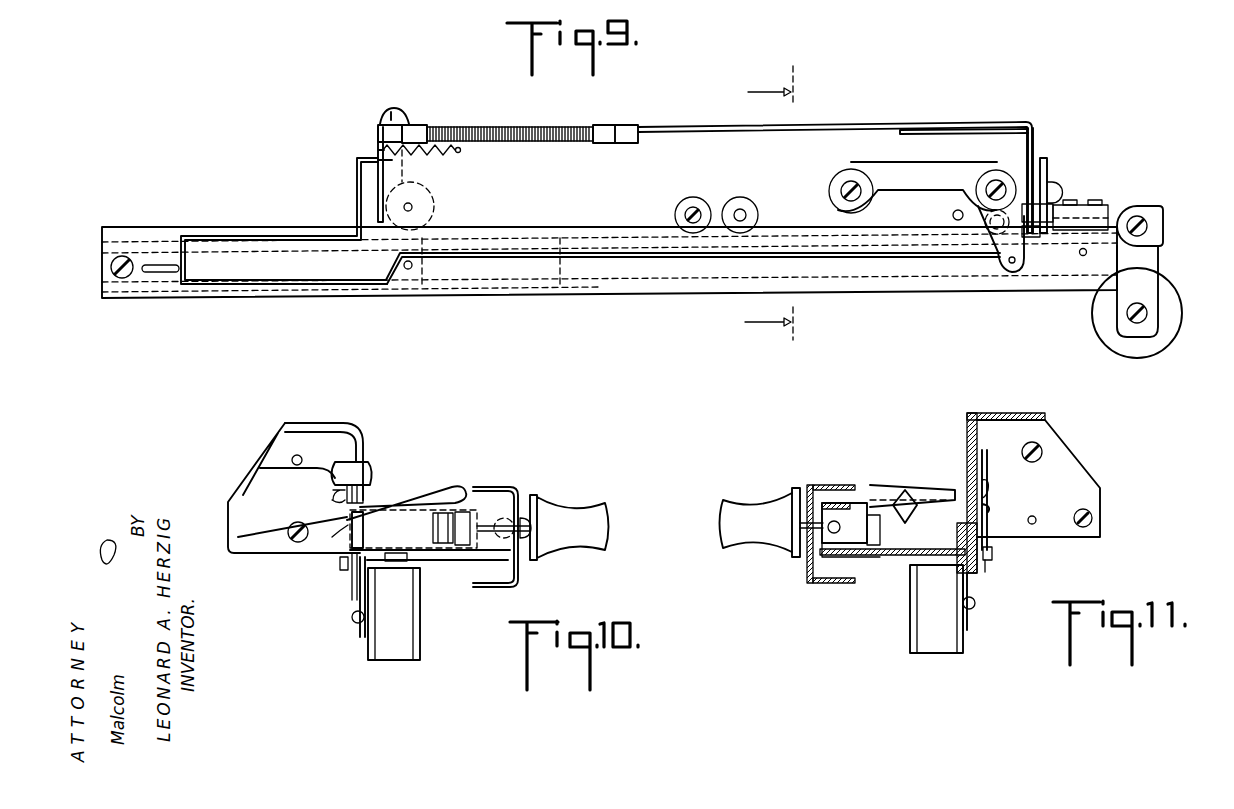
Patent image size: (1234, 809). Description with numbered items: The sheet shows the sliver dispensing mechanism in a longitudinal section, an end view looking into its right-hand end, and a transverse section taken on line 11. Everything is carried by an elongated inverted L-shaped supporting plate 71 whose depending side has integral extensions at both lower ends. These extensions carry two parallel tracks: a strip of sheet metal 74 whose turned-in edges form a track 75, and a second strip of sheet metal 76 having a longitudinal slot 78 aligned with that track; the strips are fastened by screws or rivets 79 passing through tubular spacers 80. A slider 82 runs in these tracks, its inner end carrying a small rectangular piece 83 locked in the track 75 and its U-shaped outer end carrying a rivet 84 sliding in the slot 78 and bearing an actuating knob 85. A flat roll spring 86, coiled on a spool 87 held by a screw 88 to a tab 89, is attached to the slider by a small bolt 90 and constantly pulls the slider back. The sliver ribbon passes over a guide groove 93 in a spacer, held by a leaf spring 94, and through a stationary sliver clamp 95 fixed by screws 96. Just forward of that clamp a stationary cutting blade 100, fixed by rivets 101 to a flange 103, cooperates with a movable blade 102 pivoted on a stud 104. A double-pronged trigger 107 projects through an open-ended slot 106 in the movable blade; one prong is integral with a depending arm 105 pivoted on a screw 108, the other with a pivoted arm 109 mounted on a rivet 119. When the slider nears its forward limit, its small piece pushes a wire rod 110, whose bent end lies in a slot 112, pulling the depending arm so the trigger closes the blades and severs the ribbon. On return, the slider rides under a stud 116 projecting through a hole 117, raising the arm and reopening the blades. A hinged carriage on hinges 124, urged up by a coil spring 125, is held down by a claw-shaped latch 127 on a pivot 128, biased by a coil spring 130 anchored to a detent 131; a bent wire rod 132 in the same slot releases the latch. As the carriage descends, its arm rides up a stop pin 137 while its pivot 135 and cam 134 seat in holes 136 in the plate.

In FIG. 9, the section line 11 is at (769, 209).
In FIG. 9, the supporting plate 71 is at (722, 138).
In FIG. 10, the supporting plate 71 is at (360, 428).
In FIG. 11, the supporting plate 71 is at (976, 416).
In FIG. 11, the strip of sheet metal 74 is at (1018, 522).
In FIG. 11, the track 75 is at (962, 575).
In FIG. 10, the strip of sheet metal 76 is at (503, 518).
In FIG. 11, the strip of sheet metal 76 is at (810, 572).
In FIG. 11, the longitudinal slot 78 is at (795, 502).
In FIG. 9, the screws or rivets 79 is at (122, 256).
In FIG. 10, the screws or rivets 79 is at (337, 540).
In FIG. 10, the tubular spacers 80 is at (437, 512).
In FIG. 11, the tubular spacers 80 is at (841, 537).
In FIG. 10, the slider 82 is at (462, 565).
In FIG. 11, the slider 82 is at (890, 557).
In FIG. 11, the small rectangular piece 83 is at (928, 572).
In FIG. 10, the rivet 84 is at (530, 531).
In FIG. 11, the rivet 84 is at (820, 528).
In FIG. 10, the actuating knob 85 is at (574, 510).
In FIG. 11, the actuating knob 85 is at (737, 504).
In FIG. 10, the flat roll spring 86 is at (397, 648).
In FIG. 11, the flat roll spring 86 is at (945, 650).
In FIG. 9, the spool 87 is at (1182, 320).
In FIG. 10, the spool 87 is at (422, 644).
In FIG. 11, the spool 87 is at (912, 648).
In FIG. 9, the screw 88 is at (1137, 330).
In FIG. 10, the screw 88 is at (352, 617).
In FIG. 11, the screw 88 is at (975, 603).
In FIG. 9, the tab 89 is at (1128, 305).
In FIG. 10, the tab 89 is at (364, 628).
In FIG. 11, the tab 89 is at (968, 628).
In FIG. 10, the small bolt 90 is at (406, 555).
In FIG. 10, the guide groove 93 is at (458, 510).
In FIG. 11, the guide groove 93 is at (876, 542).
In FIG. 9, the leaf spring 94 is at (1166, 238).
In FIG. 9, the stationary sliver clamp 95 is at (1105, 205).
In FIG. 9, the screws 96 is at (1072, 200).
In FIG. 9, the stationary cutting blade 100 is at (1036, 135).
In FIG. 10, the stationary cutting blade 100 is at (485, 520).
In FIG. 11, the stationary cutting blade 100 is at (890, 500).
In FIG. 10, the rivets 101 is at (292, 460).
In FIG. 11, the rivets 101 is at (1044, 450).
In FIG. 9, the movable blade 102 is at (1045, 165).
In FIG. 10, the movable blade 102 is at (400, 494).
In FIG. 11, the movable blade 102 is at (912, 490).
In FIG. 9, the flange 103 is at (1026, 148).
In FIG. 10, the flange 103 is at (300, 432).
In FIG. 11, the flange 103 is at (1076, 463).
In FIG. 9, the stud 104 is at (1062, 223).
In FIG. 10, the stud 104 is at (290, 530).
In FIG. 9, the depending arm 105 is at (1026, 252).
In FIG. 10, the depending arm 105 is at (340, 566).
In FIG. 11, the depending arm 105 is at (988, 565).
In FIG. 10, the open-ended slot 106 is at (336, 462).
In FIG. 9, the trigger 107 is at (1056, 185).
In FIG. 10, the trigger 107 is at (361, 492).
In FIG. 9, the screw 108 is at (985, 184).
In FIG. 11, the screw 108 is at (989, 486).
In FIG. 9, the pivoted arm 109 is at (895, 172).
In FIG. 11, the pivoted arm 109 is at (990, 508).
In FIG. 9, the wire rod 110 is at (622, 262).
In FIG. 10, the wire rod 110 is at (353, 576).
In FIG. 11, the wire rod 110 is at (993, 553).
In FIG. 9, the slot 112 is at (162, 274).
In FIG. 9, the stud 116 is at (986, 246).
In FIG. 9, the hole 117 is at (953, 214).
In FIG. 9, the rivet 119 is at (843, 192).
In FIG. 9, the hinges 124 is at (412, 130).
In FIG. 9, the coil spring 125 is at (508, 130).
In FIG. 9, the claw-shaped latch 127 is at (391, 112).
In FIG. 9, the pivot 128 is at (418, 208).
In FIG. 9, the coil spring 130 is at (421, 152).
In FIG. 9, the detent 131 is at (375, 162).
In FIG. 9, the wire rod 132 is at (218, 232).
In FIG. 9, the cam 134 is at (758, 214).
In FIG. 9, the pivot 135 is at (675, 214).
In FIG. 9, the holes 136 is at (715, 195).
In FIG. 11, the stop pin 137 is at (900, 490).